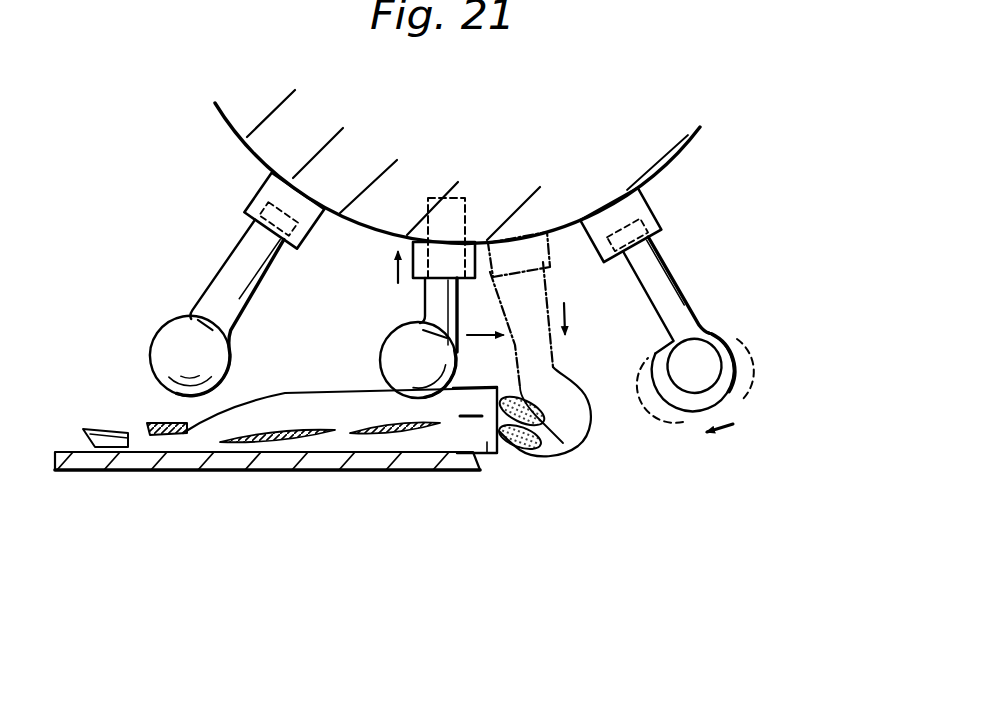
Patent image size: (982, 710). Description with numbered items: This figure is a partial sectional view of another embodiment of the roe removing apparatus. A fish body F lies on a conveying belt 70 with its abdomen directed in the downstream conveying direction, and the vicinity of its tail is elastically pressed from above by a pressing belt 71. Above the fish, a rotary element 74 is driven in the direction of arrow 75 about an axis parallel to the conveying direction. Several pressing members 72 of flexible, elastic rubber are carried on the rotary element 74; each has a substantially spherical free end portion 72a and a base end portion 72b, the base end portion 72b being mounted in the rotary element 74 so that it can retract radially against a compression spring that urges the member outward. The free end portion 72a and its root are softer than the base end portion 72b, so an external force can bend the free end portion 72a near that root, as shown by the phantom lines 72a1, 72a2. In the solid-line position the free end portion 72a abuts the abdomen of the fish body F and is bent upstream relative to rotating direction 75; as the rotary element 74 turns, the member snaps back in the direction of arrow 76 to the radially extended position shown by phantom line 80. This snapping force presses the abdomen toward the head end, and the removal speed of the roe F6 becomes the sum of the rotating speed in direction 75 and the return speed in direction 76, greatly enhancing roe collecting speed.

The conveying belt 70 is at (342, 461).
The pressing belt 71 is at (163, 428).
The pressing member 72 is at (230, 369).
The free end portion 72a is at (403, 350).
The phantom line of bent free end portion 72a1 is at (651, 405).
The phantom line of bent free end portion 72a2 is at (748, 370).
The base end portion 72b is at (413, 240).
The rotary element 74 is at (676, 144).
The arrow of rotating direction 75 is at (527, 149).
The arrow of returning direction 76 is at (464, 456).
The phantom line of restored position 80 is at (548, 367).
The fish body F is at (413, 398).
The film gripping fingers F6 is at (523, 455).